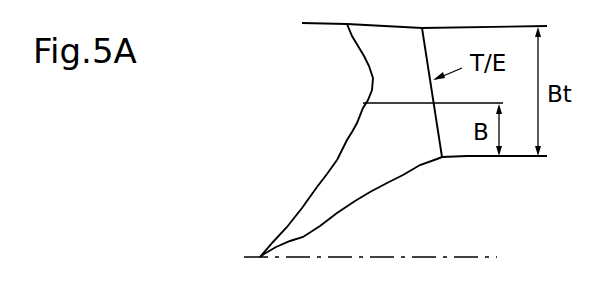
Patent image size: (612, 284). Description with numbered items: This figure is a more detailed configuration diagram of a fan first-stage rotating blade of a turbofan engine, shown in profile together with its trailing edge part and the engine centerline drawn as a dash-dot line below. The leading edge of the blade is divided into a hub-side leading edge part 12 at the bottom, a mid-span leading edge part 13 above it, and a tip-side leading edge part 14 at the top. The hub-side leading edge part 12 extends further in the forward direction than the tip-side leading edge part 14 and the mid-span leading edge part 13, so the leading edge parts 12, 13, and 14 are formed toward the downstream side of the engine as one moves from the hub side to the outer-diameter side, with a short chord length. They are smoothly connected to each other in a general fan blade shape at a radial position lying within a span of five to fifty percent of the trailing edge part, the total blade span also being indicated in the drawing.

The hub-side leading edge part 12 is at (317, 186).
The mid-span leading edge part 13 is at (366, 74).
The tip-side leading edge part 14 is at (352, 42).